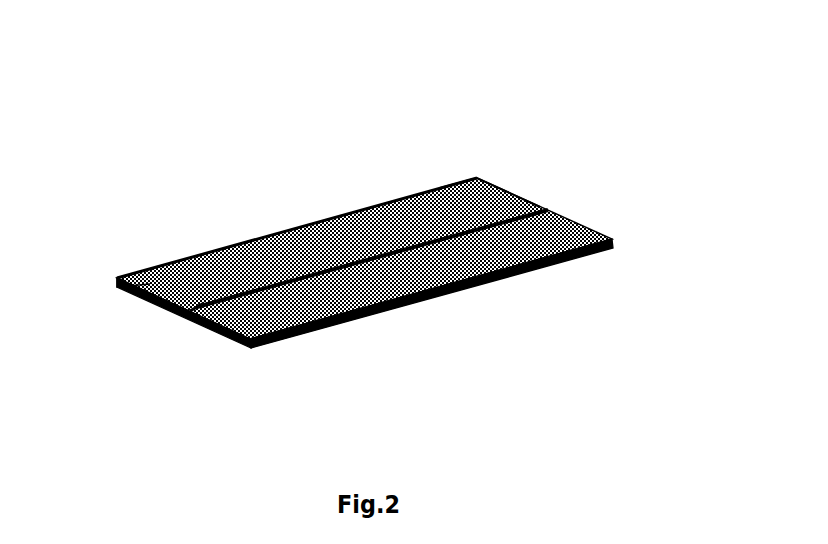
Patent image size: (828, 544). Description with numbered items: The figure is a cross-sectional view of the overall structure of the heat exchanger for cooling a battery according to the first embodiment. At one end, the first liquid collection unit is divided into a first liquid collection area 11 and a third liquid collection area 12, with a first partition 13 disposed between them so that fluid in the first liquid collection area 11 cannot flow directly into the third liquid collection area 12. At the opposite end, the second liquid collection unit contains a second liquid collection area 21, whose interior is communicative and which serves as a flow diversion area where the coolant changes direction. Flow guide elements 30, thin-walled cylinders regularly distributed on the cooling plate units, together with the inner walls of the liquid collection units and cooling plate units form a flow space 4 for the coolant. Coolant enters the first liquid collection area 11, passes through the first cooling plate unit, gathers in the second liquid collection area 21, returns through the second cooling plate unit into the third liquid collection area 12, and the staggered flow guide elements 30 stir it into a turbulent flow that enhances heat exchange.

The flow space 4 is at (326, 218).
The first liquid collection area 11 is at (245, 293).
The third liquid collection area 12 is at (136, 270).
The first partition 13 is at (196, 312).
The second liquid collection area 21 is at (498, 185).
The flow guide elements 30 is at (370, 314).